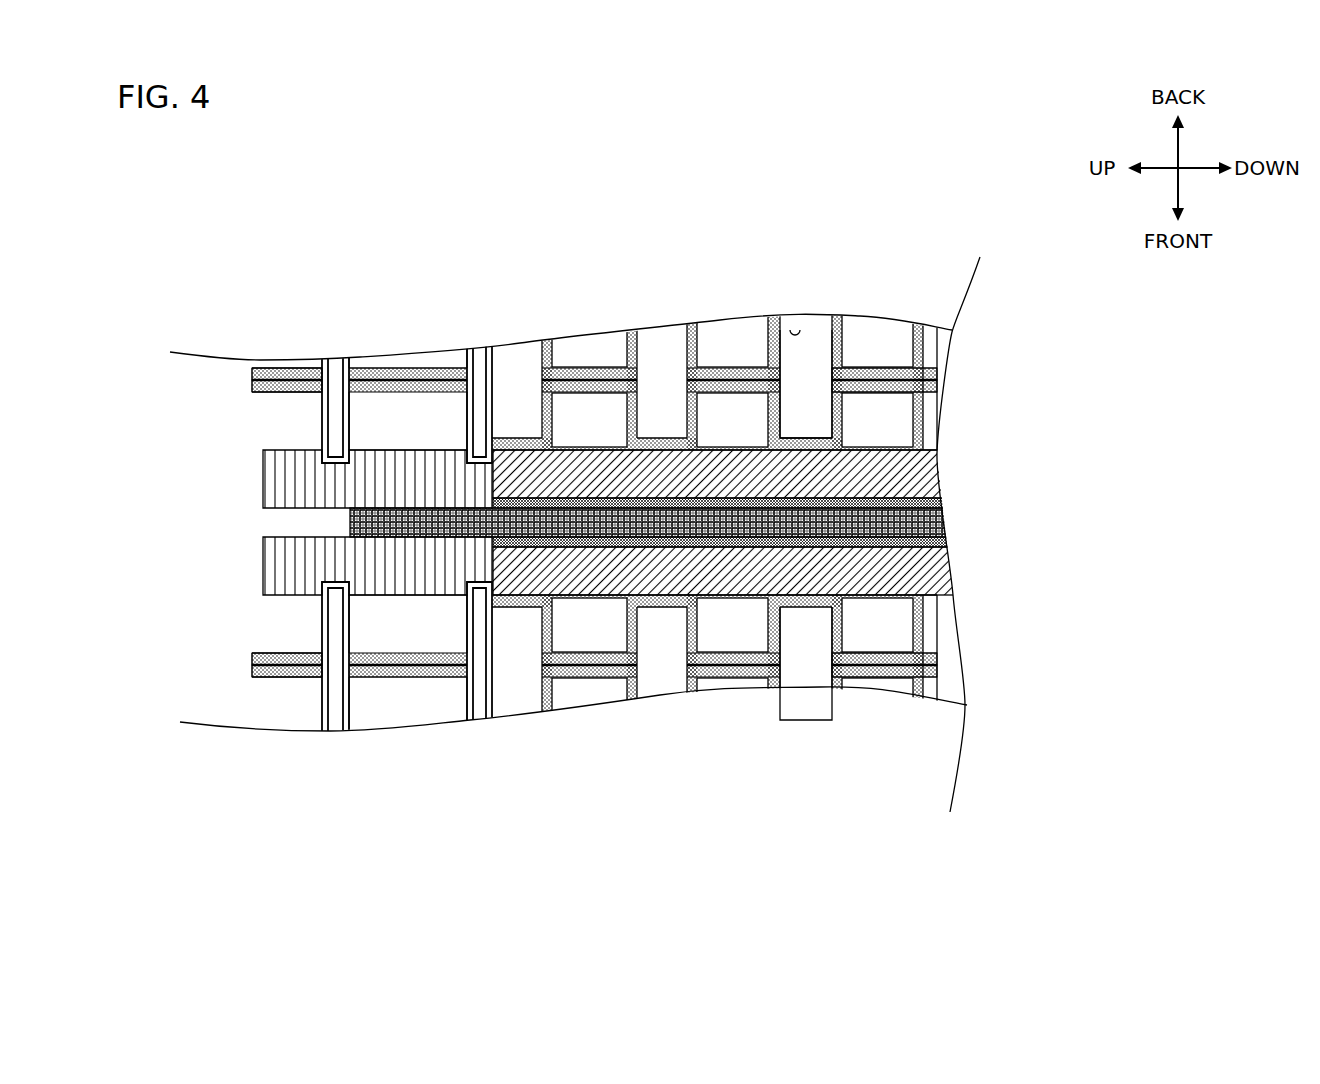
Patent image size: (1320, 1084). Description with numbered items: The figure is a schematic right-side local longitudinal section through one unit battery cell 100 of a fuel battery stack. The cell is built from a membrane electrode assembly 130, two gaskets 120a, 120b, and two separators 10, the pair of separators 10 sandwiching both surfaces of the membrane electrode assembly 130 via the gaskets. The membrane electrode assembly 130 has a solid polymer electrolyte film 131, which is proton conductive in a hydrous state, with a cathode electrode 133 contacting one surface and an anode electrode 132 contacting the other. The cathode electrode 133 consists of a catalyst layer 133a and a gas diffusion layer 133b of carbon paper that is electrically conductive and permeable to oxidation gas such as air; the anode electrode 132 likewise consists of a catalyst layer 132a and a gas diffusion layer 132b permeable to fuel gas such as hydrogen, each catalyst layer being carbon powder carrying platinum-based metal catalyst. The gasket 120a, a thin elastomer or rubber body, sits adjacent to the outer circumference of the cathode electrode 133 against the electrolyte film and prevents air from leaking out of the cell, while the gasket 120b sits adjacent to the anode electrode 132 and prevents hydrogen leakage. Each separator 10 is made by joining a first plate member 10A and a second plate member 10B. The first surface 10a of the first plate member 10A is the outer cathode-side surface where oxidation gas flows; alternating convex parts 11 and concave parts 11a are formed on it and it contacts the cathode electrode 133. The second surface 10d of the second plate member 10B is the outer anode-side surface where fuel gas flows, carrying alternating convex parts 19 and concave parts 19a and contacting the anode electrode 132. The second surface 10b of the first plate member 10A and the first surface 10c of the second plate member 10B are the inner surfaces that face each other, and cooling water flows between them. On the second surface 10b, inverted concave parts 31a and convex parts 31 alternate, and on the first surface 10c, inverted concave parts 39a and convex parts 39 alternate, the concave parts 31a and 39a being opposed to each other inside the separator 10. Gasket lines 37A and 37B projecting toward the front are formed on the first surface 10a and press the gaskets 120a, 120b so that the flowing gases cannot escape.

The unit battery cell 100 is at (576, 231).
The separator 10 is at (523, 522).
The first plate member 10A is at (248, 393).
The second plate member 10B is at (250, 377).
The first surface 10a is at (287, 394).
The second surface 10b is at (282, 374).
The first surface 10c is at (395, 384).
The second surface 10d is at (394, 364).
The gasket line 37A is at (480, 462).
The gasket line 37B is at (332, 462).
The convex part 11 is at (764, 496).
The concave part 11a is at (880, 392).
The convex part 31 is at (902, 374).
The concave part 31a is at (800, 437).
The concave part 39a is at (792, 328).
The convex part 39 is at (870, 682).
The convex part 19 is at (771, 686).
The concave part 19a is at (888, 649).
The gasket 120a is at (283, 492).
The gasket 120b is at (282, 565).
The membrane electrode assembly 130 is at (771, 530).
The solid polymer electrolyte film 131 is at (940, 517).
The anode electrode 132 is at (814, 582).
The catalyst layer 132a is at (947, 545).
The gas diffusion layer 132b is at (953, 585).
The cathode electrode 133 is at (814, 470).
The catalyst layer 133a is at (940, 490).
The gas diffusion layer 133b is at (937, 449).